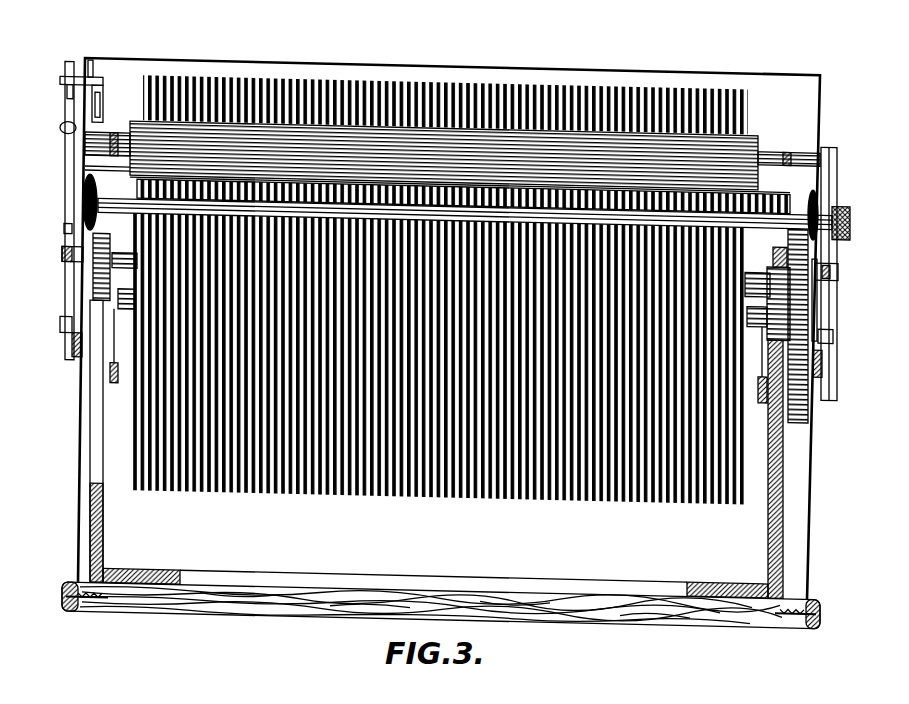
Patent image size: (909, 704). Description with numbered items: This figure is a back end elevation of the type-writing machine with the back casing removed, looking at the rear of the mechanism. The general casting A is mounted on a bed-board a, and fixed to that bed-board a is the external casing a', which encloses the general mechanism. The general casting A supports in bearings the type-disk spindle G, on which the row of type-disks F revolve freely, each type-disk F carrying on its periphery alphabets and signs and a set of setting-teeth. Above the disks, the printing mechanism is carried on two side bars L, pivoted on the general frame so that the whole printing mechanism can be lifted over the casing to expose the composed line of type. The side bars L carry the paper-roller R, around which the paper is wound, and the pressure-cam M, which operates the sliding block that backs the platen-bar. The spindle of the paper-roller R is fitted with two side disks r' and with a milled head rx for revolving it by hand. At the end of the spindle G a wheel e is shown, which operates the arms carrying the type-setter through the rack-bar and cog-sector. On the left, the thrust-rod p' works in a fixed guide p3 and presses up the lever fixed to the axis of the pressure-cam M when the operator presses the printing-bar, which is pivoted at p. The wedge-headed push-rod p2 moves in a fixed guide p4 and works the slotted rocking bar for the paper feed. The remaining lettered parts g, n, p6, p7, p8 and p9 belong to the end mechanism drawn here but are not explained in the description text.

The external casing a' is at (461, 308).
The bed-board a is at (435, 565).
The general casting A is at (96, 386).
The type-disk F is at (308, 487).
The fixed guide p3 is at (848, 252).
The paper-roller R is at (457, 211).
The pressure-cam M is at (85, 166).
The nut n is at (790, 134).
The side bars L is at (837, 163).
The milled head rx is at (851, 203).
The side disks r' is at (787, 219).
The type-disk spindle G is at (767, 261).
The wheel e is at (798, 338).
The pinion g is at (115, 364).
The pivot of printing-bar p is at (434, 220).
The thrust-rod p' is at (480, 277).
The wedge-headed push-rod p2 is at (68, 228).
The fixed guide p4 is at (103, 100).
The pin p6 is at (90, 58).
The bar p7 is at (65, 78).
The bracket p8 is at (67, 96).
The roller p9 is at (60, 127).